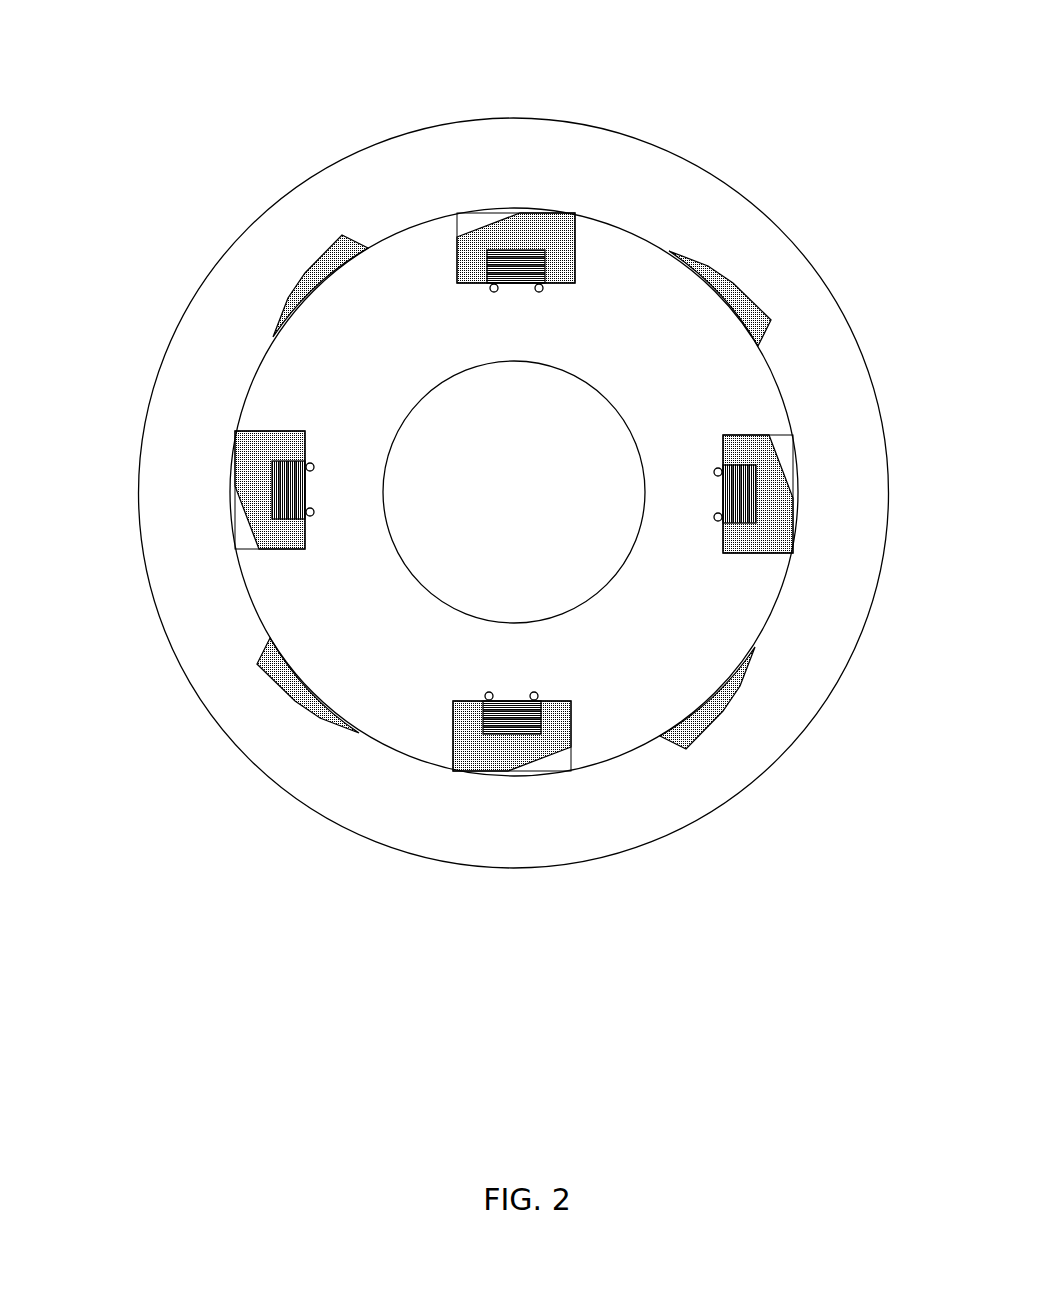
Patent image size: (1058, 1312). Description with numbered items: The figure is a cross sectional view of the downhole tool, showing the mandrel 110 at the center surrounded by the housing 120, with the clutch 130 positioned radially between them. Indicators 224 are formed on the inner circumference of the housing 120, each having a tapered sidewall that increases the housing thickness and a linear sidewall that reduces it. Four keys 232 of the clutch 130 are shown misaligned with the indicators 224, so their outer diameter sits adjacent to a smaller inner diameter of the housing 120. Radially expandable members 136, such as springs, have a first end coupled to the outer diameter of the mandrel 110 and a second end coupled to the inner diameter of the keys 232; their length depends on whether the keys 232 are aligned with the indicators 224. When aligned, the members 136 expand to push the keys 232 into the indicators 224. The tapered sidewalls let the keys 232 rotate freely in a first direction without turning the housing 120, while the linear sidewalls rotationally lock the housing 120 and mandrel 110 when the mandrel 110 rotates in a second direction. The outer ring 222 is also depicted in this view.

The mandrel 110 is at (340, 602).
The housing 120 is at (193, 398).
The clutch 130 is at (455, 740).
The radially expandable members 136 is at (748, 518).
The stator yoke ring 222 is at (385, 228).
The indicators 224 is at (320, 257).
The keys 232 is at (545, 228).